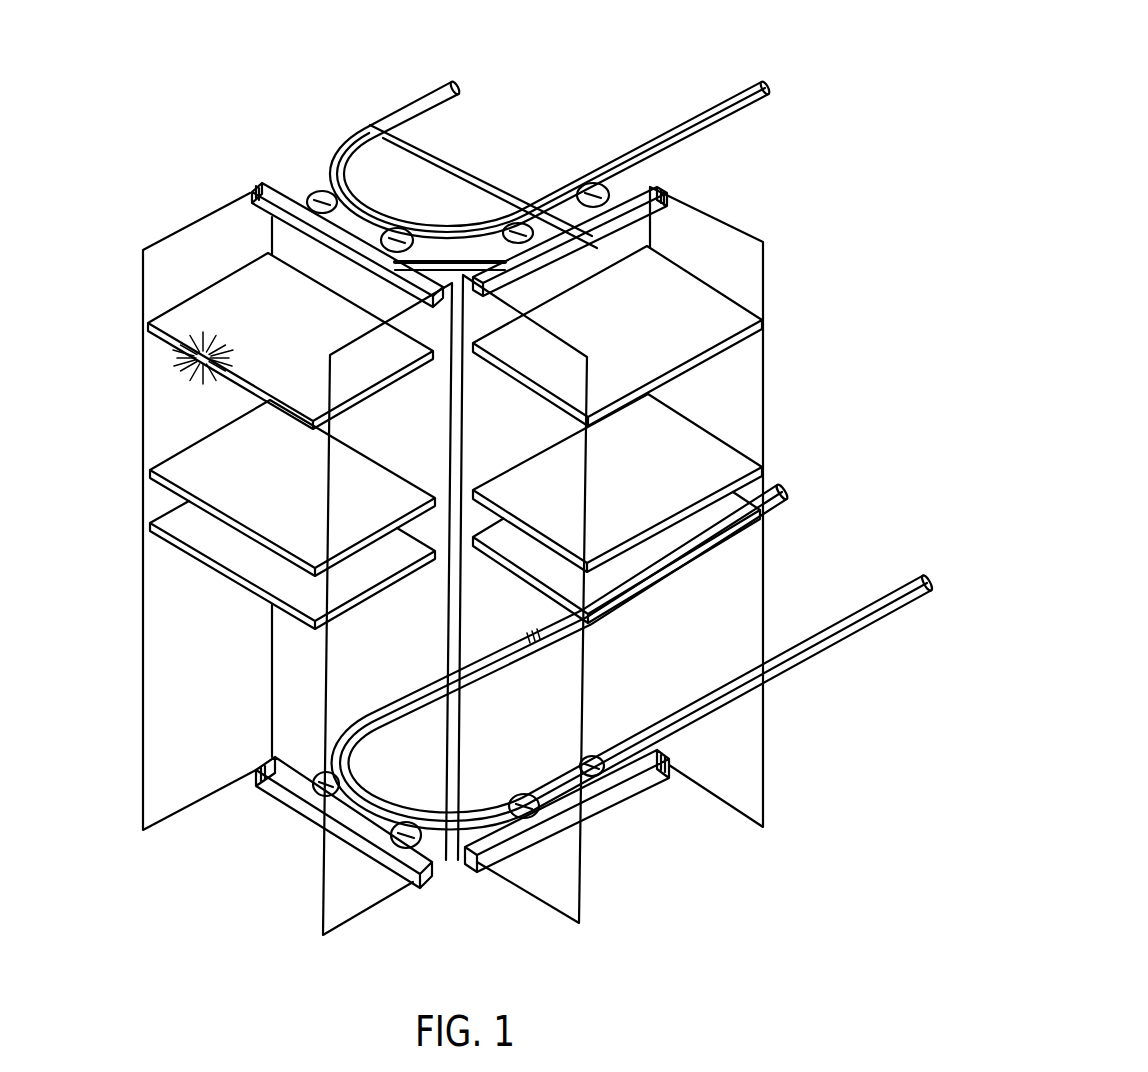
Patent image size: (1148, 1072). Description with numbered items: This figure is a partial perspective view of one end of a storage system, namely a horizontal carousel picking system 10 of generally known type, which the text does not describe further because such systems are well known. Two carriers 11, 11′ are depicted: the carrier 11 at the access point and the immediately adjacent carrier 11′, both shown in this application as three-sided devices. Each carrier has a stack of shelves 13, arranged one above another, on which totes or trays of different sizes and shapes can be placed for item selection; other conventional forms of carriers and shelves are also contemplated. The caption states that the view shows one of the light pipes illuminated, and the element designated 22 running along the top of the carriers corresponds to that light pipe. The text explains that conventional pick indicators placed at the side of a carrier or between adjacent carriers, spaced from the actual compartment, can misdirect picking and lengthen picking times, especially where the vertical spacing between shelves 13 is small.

The horizontal carousel picking system 10 is at (567, 84).
The carrier 11 is at (158, 682).
The carrier 11′ is at (749, 397).
The shelf 13 is at (291, 335).
The tube 22 is at (727, 92).